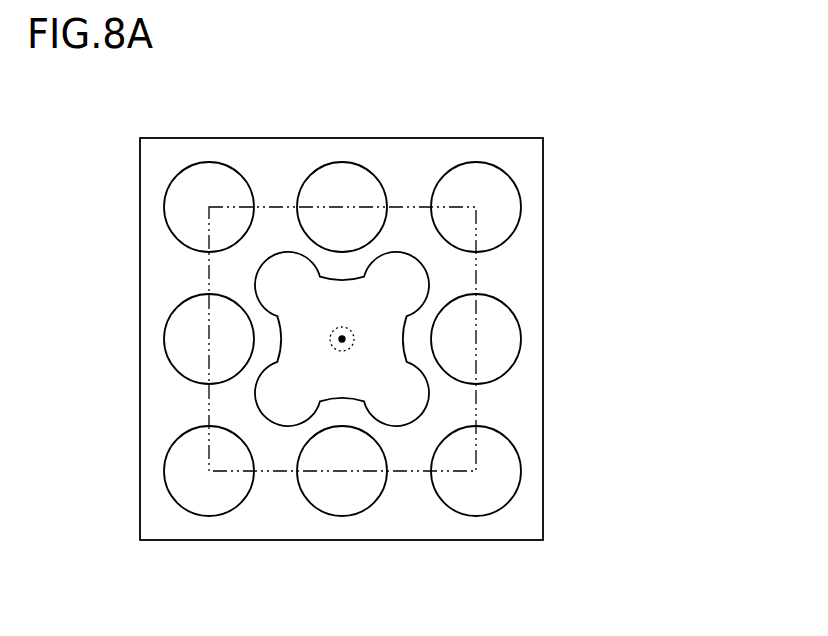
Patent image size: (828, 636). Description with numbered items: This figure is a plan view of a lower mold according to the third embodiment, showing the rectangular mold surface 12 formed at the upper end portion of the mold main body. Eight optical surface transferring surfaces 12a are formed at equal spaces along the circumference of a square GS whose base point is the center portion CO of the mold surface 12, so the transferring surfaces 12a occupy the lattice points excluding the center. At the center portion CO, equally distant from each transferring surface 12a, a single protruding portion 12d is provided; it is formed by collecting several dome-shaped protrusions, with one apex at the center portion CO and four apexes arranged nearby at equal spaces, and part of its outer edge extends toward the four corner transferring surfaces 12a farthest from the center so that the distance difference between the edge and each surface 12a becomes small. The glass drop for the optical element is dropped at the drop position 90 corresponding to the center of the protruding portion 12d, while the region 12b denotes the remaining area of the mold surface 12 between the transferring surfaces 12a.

The mold surface 12 is at (556, 141).
The optical surface transferring surfaces 12a is at (508, 203).
The surface region 12b is at (527, 410).
The protruding portion 12d is at (390, 272).
The drop position 90 is at (333, 347).
The square GS is at (327, 471).
The center portion CO is at (348, 346).